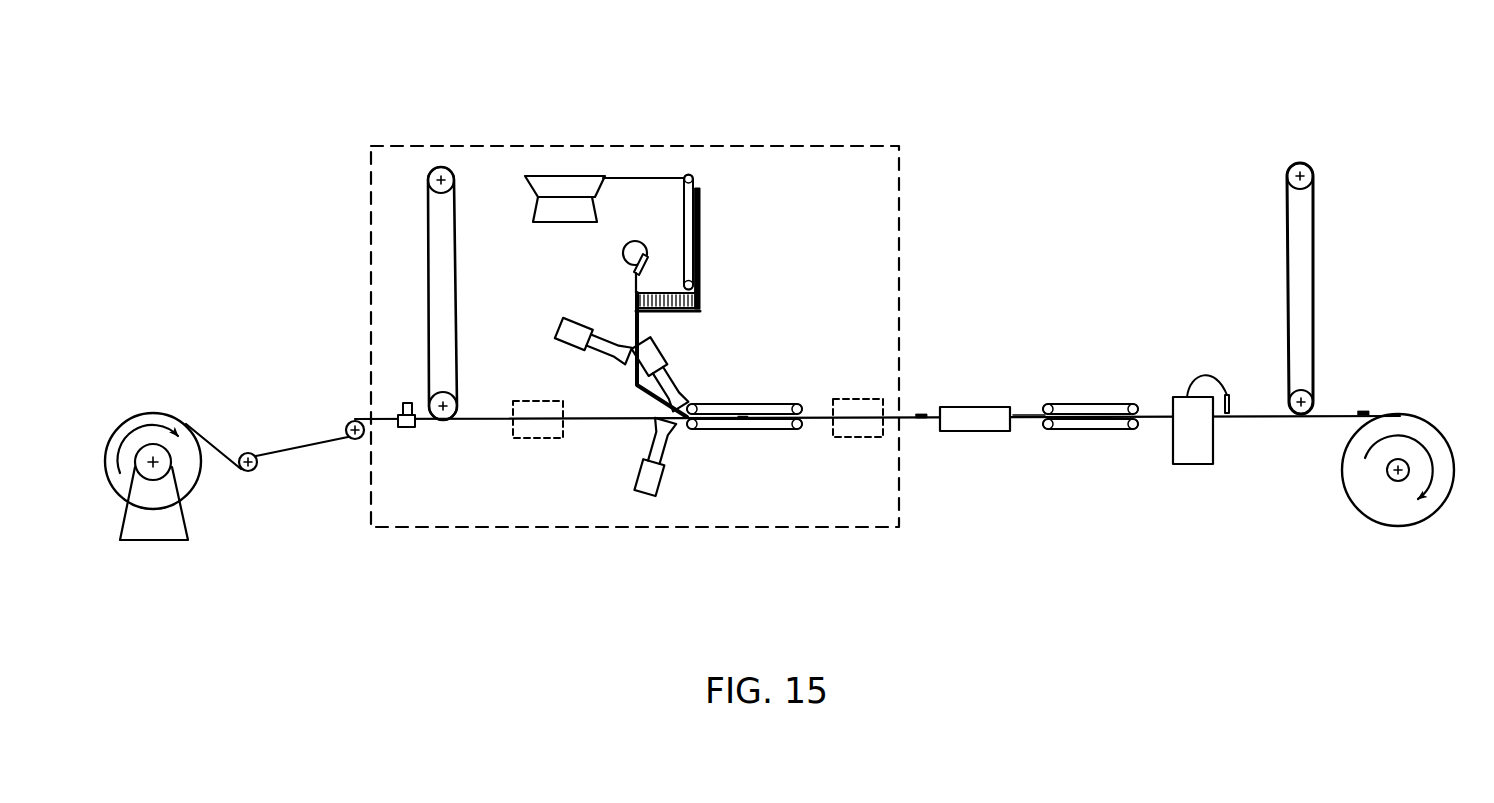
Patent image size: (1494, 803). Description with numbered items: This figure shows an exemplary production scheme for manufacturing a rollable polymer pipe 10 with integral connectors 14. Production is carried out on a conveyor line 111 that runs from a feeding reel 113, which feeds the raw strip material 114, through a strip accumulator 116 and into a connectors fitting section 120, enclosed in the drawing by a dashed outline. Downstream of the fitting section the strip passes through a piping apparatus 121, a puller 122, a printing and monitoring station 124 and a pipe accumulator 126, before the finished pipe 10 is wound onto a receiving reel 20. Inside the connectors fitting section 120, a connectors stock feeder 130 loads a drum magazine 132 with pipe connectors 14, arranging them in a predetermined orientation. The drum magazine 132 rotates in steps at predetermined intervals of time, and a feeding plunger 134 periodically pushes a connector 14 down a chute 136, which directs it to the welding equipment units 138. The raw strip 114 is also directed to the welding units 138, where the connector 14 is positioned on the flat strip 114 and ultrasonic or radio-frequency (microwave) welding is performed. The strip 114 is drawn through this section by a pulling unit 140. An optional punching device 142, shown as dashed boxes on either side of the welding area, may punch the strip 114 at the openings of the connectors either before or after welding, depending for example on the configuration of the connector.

The rollable polymer pipe 10 is at (1327, 413).
The integral connector 14 is at (921, 414).
The receiving reel 20 is at (1395, 527).
The conveyor line 111 is at (934, 110).
The feeding reel 113 is at (150, 412).
The raw strip material 114 is at (300, 445).
The strip accumulator 116 is at (424, 235).
The connectors fitting section 120 is at (723, 146).
The piping apparatus 121 is at (973, 407).
The puller 122 is at (1087, 404).
The printing and monitoring station 124 is at (1182, 397).
The pipe accumulator 126 is at (1315, 203).
The connectors stock feeder 130 is at (565, 176).
The drum magazine 132 is at (700, 302).
The feeding plunger 134 is at (633, 284).
The chute 136 is at (640, 330).
The welding equipment unit 138 is at (613, 347).
The pulling unit 140 is at (743, 430).
The punching device 142 is at (537, 401).